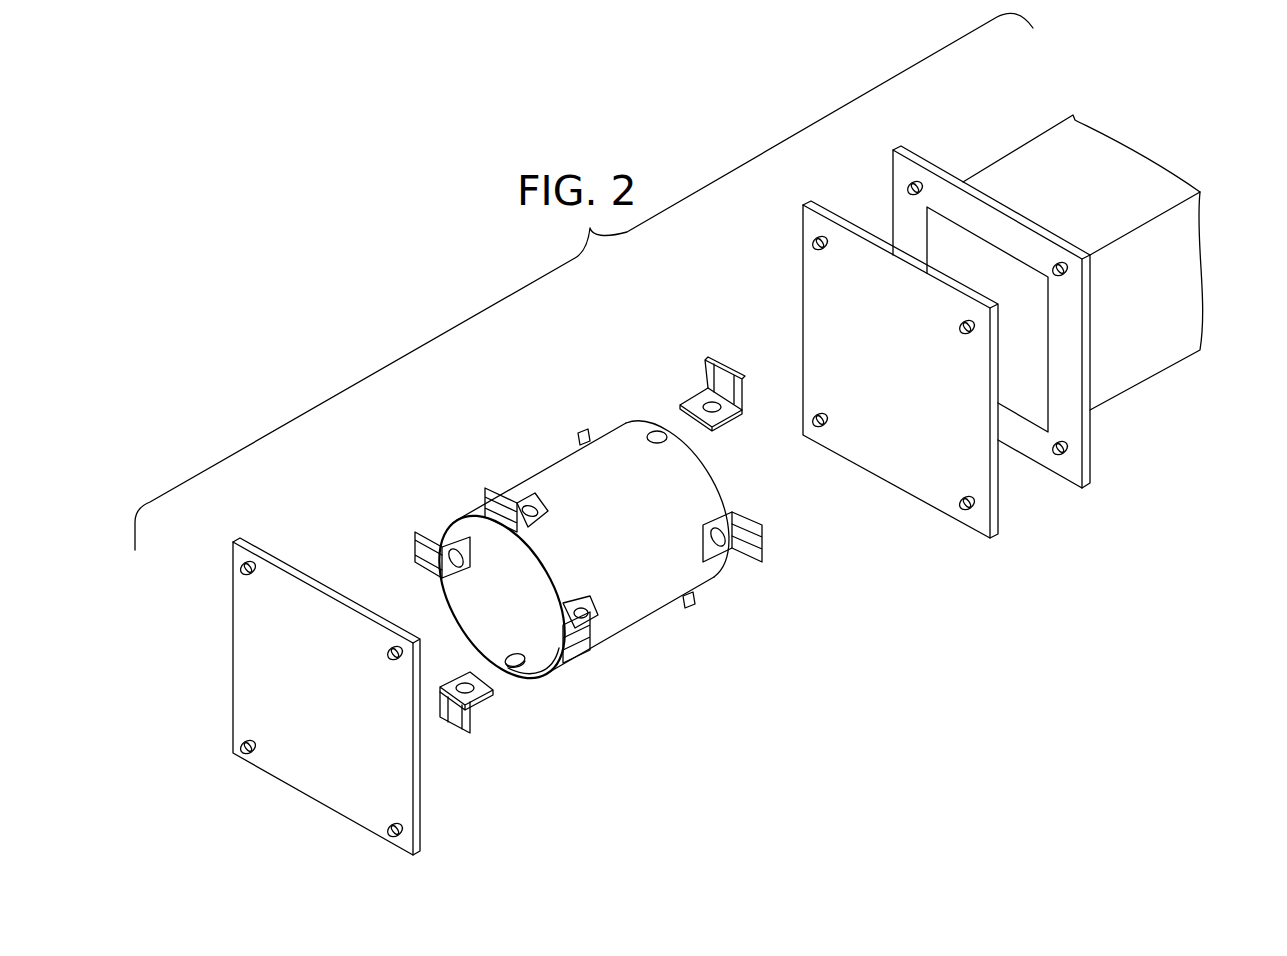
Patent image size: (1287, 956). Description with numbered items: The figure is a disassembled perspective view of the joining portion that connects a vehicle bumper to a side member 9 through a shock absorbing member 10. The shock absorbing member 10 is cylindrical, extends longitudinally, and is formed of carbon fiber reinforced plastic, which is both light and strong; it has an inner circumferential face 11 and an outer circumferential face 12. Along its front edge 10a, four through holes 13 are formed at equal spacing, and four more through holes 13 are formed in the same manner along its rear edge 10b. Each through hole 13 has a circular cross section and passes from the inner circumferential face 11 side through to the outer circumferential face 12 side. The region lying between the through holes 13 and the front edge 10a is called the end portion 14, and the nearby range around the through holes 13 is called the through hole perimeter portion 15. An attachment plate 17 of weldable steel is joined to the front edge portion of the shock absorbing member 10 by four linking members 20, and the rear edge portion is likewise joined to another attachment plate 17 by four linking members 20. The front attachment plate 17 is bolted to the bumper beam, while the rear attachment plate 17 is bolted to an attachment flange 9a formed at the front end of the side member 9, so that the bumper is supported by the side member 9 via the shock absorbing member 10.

The side member 9 is at (1153, 375).
The attachment flange 9a is at (1092, 478).
The shock absorbing member 10 is at (596, 550).
The front edge 10a is at (470, 648).
The rear edge 10b is at (715, 458).
The inner circumferential face 11 is at (470, 603).
The outer circumferential face 12 is at (627, 617).
The through hole 13 is at (541, 648).
The end portion 14 is at (514, 680).
The through hole perimeter portion 15 is at (562, 672).
The attachment plate 17 is at (823, 290).
The linking member 20 is at (418, 550).